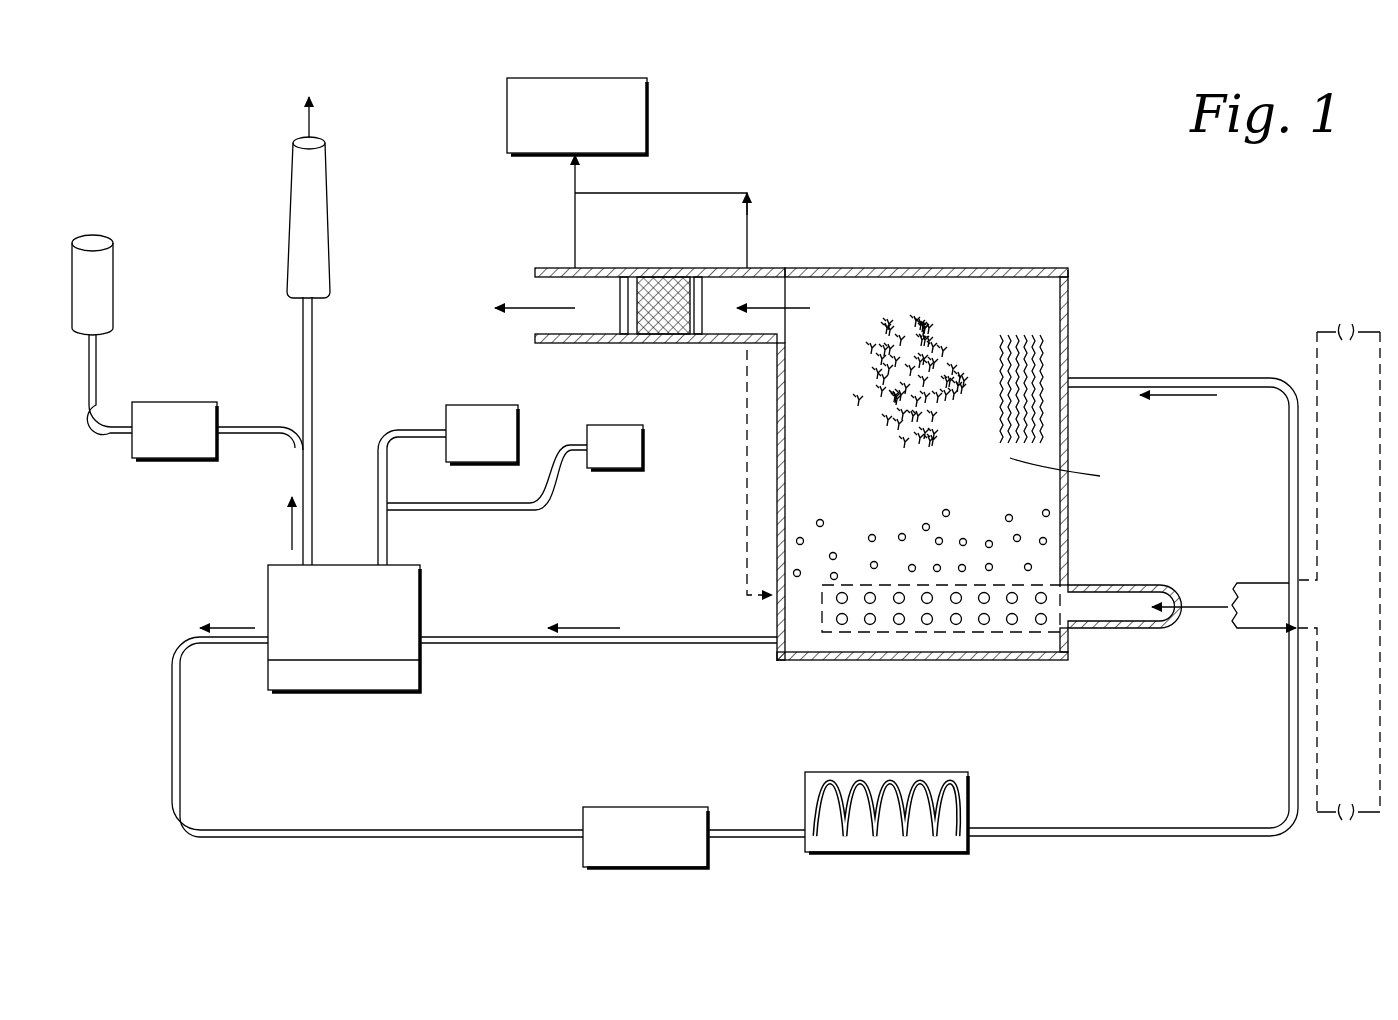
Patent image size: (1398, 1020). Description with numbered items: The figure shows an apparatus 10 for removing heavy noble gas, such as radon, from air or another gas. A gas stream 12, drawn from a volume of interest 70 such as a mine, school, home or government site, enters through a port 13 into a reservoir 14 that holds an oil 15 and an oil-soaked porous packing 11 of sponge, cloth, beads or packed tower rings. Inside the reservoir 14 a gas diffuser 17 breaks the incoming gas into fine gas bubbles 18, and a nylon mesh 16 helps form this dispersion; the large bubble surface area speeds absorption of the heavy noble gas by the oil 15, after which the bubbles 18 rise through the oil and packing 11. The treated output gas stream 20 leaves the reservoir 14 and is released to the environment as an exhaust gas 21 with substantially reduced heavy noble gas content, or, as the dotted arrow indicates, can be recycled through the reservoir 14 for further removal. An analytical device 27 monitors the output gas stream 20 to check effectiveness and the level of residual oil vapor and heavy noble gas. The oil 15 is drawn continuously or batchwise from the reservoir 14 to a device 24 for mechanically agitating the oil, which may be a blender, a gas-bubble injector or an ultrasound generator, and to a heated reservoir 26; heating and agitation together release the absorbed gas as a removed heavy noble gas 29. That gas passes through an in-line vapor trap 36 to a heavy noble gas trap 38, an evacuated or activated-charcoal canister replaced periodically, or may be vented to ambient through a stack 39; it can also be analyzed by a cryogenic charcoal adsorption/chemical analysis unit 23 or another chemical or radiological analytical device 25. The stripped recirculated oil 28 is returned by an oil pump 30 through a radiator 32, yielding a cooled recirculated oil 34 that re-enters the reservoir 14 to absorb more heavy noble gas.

The apparatus 10 is at (998, 195).
The packing 11 is at (932, 326).
The gas stream 12 is at (1195, 607).
The port 13 is at (1120, 585).
The reservoir 14 is at (922, 270).
The oil 15 is at (1071, 471).
The nylon mesh 16 is at (1036, 360).
The gas diffuser 17 is at (958, 632).
The gas bubbles 18 is at (1050, 540).
The output gas stream 20 is at (772, 308).
The exhaust gas 21 is at (520, 308).
The cryogenic charcoal adsorption/chemical analysis unit 23 is at (484, 405).
The device for mechanically agitating the oil 24 is at (400, 598).
The chemical or radiological analytical device 25 is at (617, 425).
The heated reservoir 26 is at (395, 688).
The analytical device 27 is at (650, 112).
The recirculated oil 28 is at (228, 628).
The removed heavy noble gas 29 is at (292, 525).
The oil pump 30 is at (644, 807).
The radiator 32 is at (918, 772).
The cooled recirculated oil 34 is at (1185, 395).
The in-line vapor trap 36 is at (174, 402).
The heavy noble gas trap 38 is at (103, 280).
The stack 39 is at (297, 200).
The volumes of interest 70 is at (1360, 332).